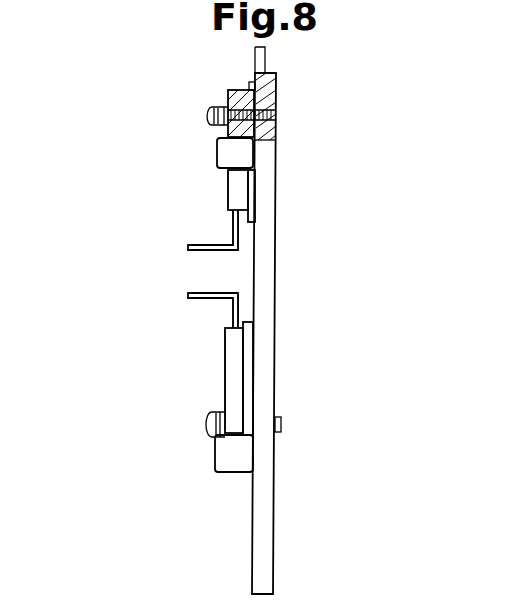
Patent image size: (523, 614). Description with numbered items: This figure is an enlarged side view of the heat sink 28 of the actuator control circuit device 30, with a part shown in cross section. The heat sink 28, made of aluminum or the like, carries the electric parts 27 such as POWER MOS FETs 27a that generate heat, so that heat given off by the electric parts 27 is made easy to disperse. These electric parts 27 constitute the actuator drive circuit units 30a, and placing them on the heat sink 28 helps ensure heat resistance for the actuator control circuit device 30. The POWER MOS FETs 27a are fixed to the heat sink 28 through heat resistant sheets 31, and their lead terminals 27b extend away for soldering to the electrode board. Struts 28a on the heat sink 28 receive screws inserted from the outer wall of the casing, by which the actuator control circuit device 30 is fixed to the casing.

The electric parts 27 is at (240, 187).
The POWER MOS FET 27a is at (240, 203).
The lead terminal 27b is at (215, 292).
The heat sink 28 is at (267, 263).
The strut 28a is at (222, 162).
The actuator control circuit device 30 is at (216, 221).
The actuator drive circuit unit 30a is at (227, 206).
The heat resistant sheet 31 is at (228, 92).